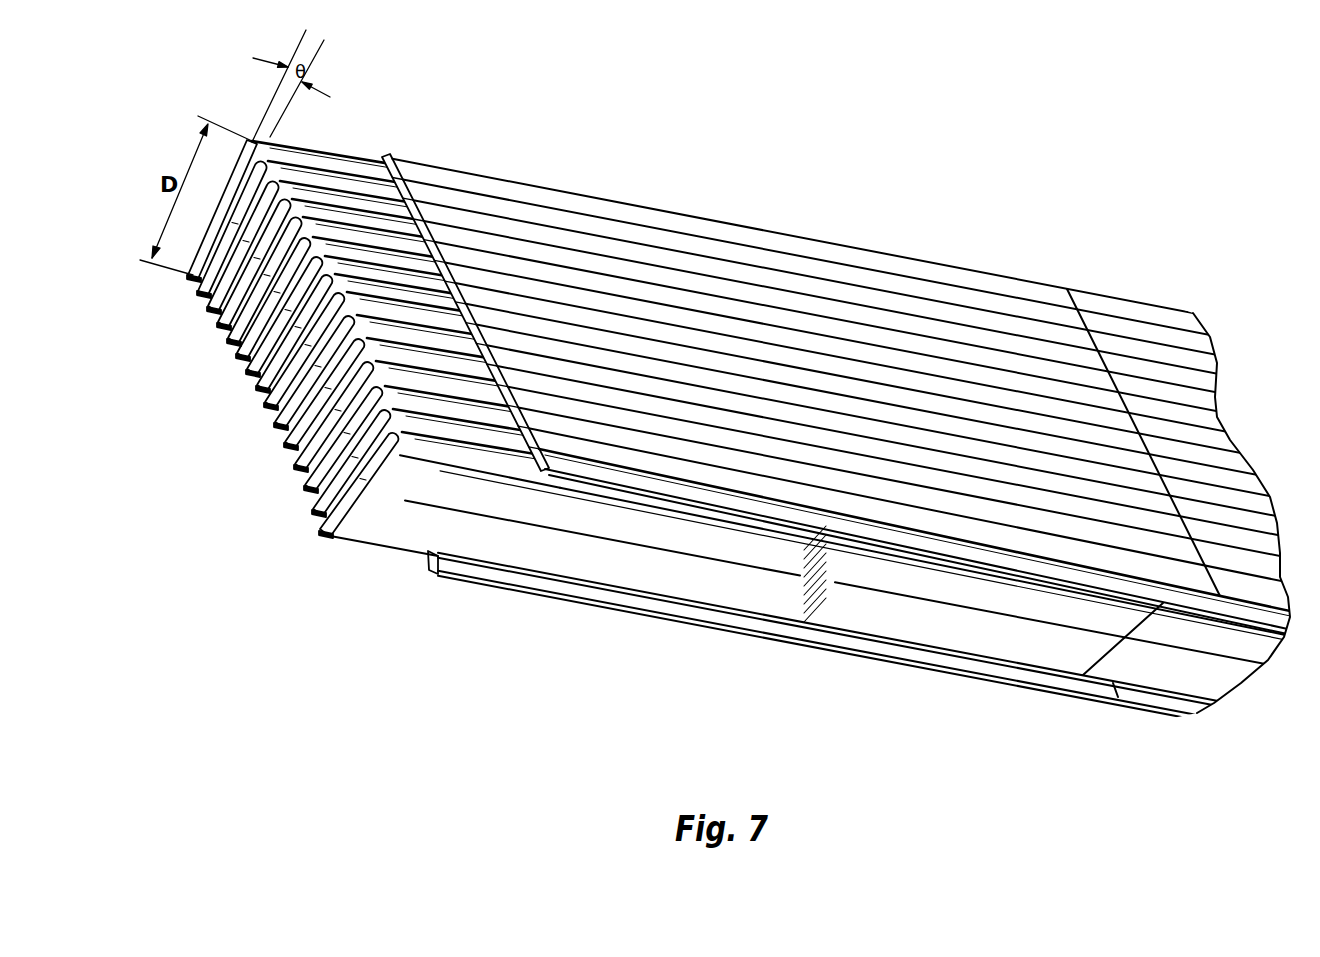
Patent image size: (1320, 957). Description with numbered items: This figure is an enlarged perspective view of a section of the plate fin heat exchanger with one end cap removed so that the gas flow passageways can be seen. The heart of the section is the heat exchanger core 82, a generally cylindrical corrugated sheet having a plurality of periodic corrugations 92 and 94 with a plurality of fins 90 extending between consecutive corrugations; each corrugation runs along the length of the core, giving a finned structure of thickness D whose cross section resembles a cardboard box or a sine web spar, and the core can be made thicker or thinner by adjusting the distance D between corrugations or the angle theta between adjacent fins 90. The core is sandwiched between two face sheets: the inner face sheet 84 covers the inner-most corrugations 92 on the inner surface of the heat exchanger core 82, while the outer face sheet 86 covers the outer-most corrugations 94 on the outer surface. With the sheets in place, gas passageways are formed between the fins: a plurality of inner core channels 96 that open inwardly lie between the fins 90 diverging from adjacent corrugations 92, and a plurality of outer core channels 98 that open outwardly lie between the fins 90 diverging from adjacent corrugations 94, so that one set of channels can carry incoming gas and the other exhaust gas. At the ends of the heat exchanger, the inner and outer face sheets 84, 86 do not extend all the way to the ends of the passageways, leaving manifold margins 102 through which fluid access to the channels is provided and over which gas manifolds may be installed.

The heat exchanger core 82 is at (773, 575).
The inner face sheet 84 is at (568, 600).
The outer face sheet 86 is at (598, 198).
The fins 90 is at (347, 515).
The inner-most corrugations 92 is at (283, 430).
The outer-most corrugations 94 is at (408, 440).
The inner core channels 96 is at (223, 305).
The outer core channels 98 is at (277, 200).
The manifold margins 102 is at (353, 158).